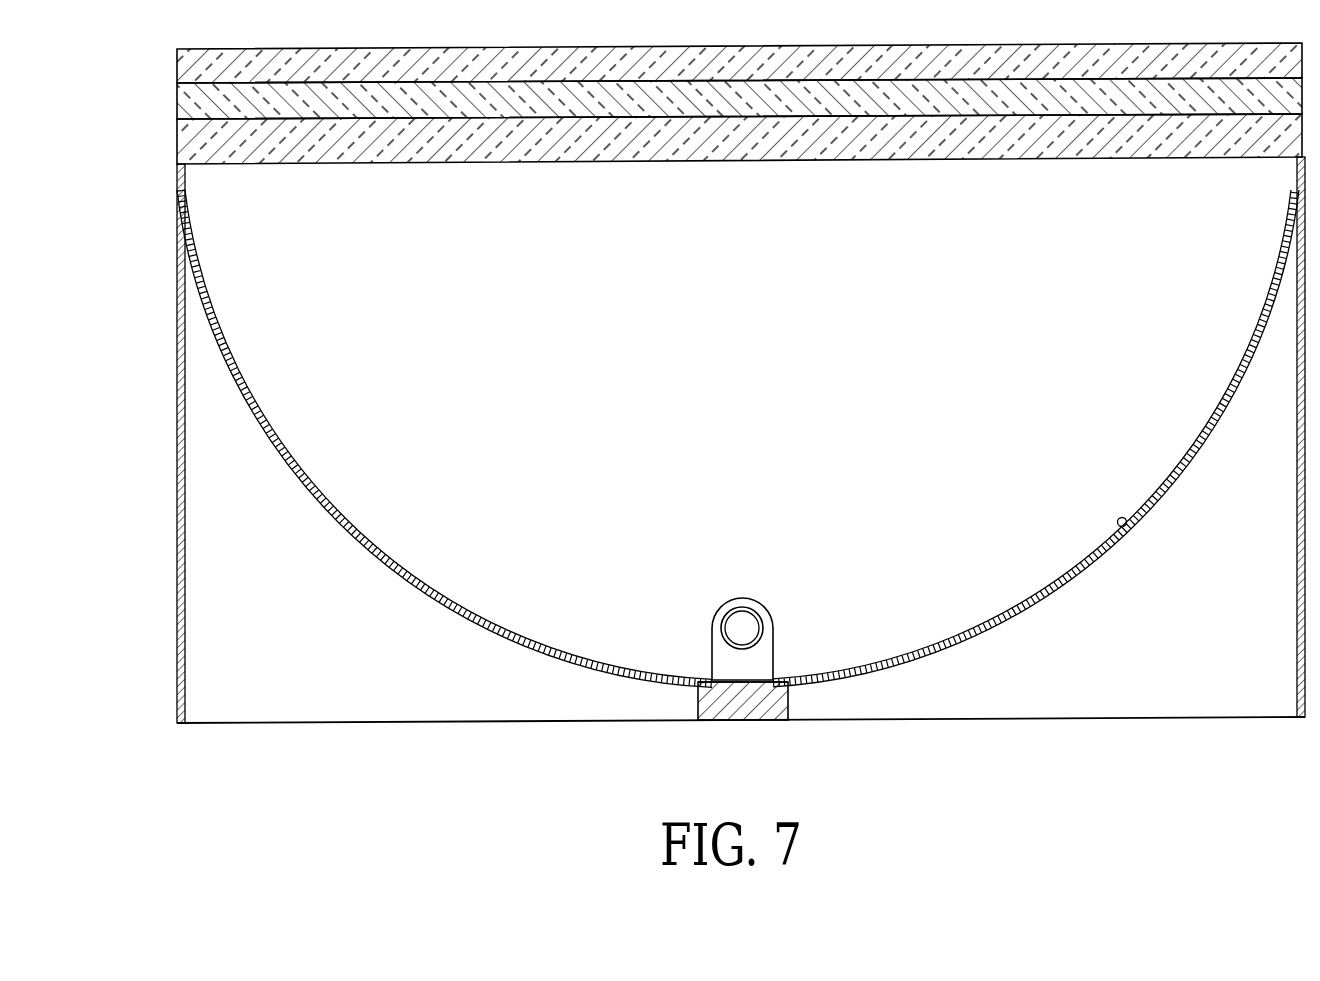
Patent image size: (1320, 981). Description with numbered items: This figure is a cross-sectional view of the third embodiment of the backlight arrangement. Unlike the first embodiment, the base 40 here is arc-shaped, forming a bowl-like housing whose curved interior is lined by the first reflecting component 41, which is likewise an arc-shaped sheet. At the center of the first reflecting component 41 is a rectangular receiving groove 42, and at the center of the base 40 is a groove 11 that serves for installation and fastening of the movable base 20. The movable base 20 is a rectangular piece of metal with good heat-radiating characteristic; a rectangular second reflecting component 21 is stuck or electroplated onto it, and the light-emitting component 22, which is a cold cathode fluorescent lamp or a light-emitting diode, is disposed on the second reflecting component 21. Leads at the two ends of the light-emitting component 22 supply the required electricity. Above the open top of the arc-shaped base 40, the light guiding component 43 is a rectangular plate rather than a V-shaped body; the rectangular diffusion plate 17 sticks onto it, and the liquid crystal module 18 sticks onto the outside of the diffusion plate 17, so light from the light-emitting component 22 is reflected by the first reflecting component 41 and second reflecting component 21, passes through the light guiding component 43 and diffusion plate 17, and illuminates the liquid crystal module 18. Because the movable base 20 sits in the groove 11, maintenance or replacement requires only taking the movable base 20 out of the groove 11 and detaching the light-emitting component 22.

The groove 11 is at (787, 690).
The diffusion plate 17 is at (187, 98).
The liquid crystal module 18 is at (200, 70).
The movable base 20 is at (760, 700).
The second reflecting component 21 is at (712, 683).
The light-emitting component 22 is at (747, 628).
The base 40 is at (1093, 678).
The first reflecting component 41 is at (1135, 522).
The receiving groove 42 is at (773, 685).
The light guiding component 43 is at (200, 138).